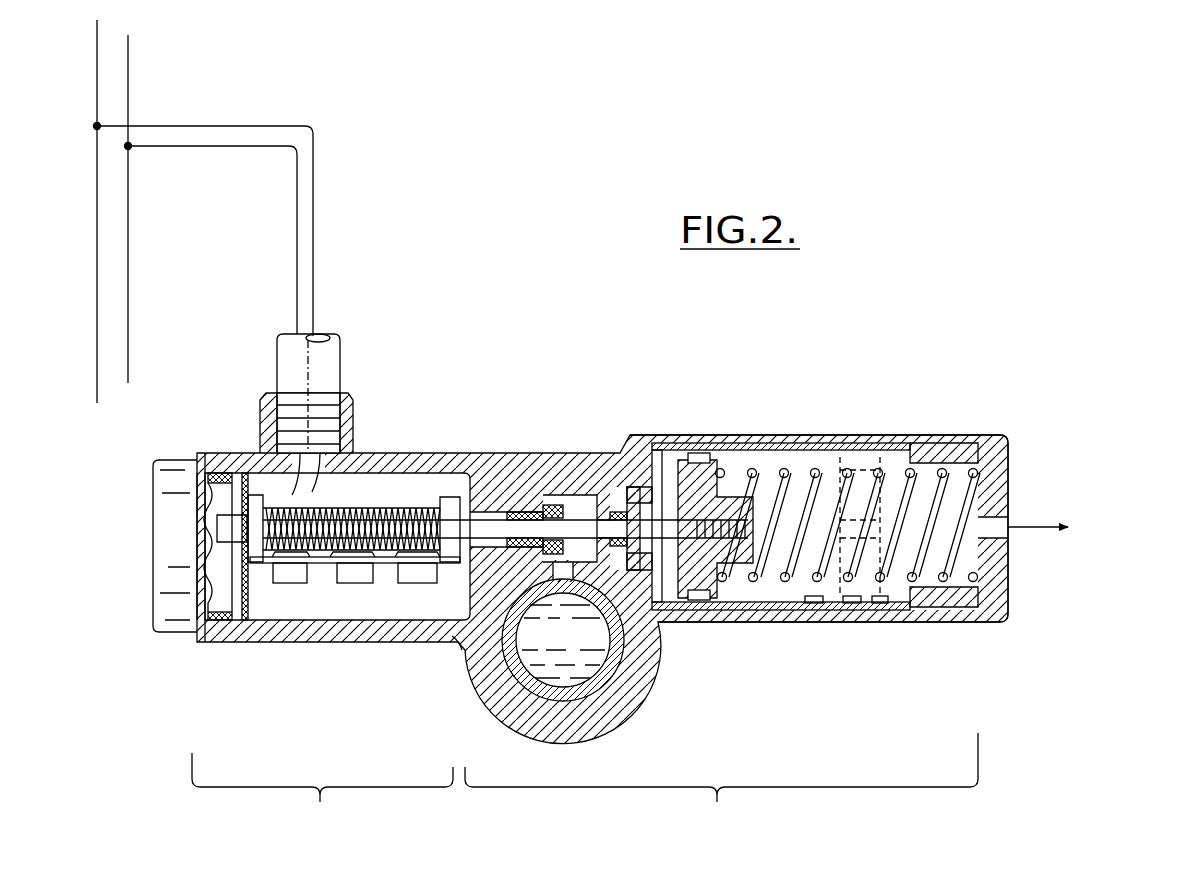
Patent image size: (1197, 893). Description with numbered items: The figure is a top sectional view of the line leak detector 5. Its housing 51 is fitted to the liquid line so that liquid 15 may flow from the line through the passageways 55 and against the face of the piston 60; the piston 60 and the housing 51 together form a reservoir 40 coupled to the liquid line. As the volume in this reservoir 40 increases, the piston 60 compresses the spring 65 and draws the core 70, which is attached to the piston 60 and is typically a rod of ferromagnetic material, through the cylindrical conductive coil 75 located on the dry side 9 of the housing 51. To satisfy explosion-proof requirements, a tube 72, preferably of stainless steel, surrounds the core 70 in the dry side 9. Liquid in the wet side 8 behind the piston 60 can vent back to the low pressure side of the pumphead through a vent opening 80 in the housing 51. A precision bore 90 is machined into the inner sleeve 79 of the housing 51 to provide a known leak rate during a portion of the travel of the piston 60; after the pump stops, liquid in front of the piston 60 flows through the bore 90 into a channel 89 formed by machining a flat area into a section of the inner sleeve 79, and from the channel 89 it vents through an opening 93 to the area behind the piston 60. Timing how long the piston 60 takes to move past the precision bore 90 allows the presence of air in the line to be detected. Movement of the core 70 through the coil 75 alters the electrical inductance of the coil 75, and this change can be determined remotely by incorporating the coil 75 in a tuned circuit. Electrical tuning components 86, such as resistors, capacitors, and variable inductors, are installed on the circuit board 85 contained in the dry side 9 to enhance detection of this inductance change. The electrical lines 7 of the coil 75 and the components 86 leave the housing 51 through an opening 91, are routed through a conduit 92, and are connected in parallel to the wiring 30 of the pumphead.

The line leak detector 5 is at (950, 398).
The electrical lines 7 is at (253, 147).
The wet side 8 is at (697, 785).
The dry side 9 is at (373, 785).
The liquid 15 is at (567, 643).
The wiring 30 is at (123, 222).
The reservoir 40 is at (607, 693).
The housing 51 is at (540, 465).
The passageways 55 is at (567, 567).
The piston 60 is at (672, 470).
The spring 65 is at (820, 460).
The core 70 is at (462, 642).
The tube 72 is at (483, 513).
The conductive coil 75 is at (365, 510).
The inner sleeve 79 is at (768, 440).
The vent opening 80 is at (1000, 528).
The circuit board 85 is at (390, 566).
The electrical tuning components 86 is at (292, 585).
The channel 89 is at (850, 605).
The precision bore 90 is at (806, 605).
The opening 91 is at (353, 430).
The conduit 92 is at (322, 370).
The opening 93 is at (880, 605).